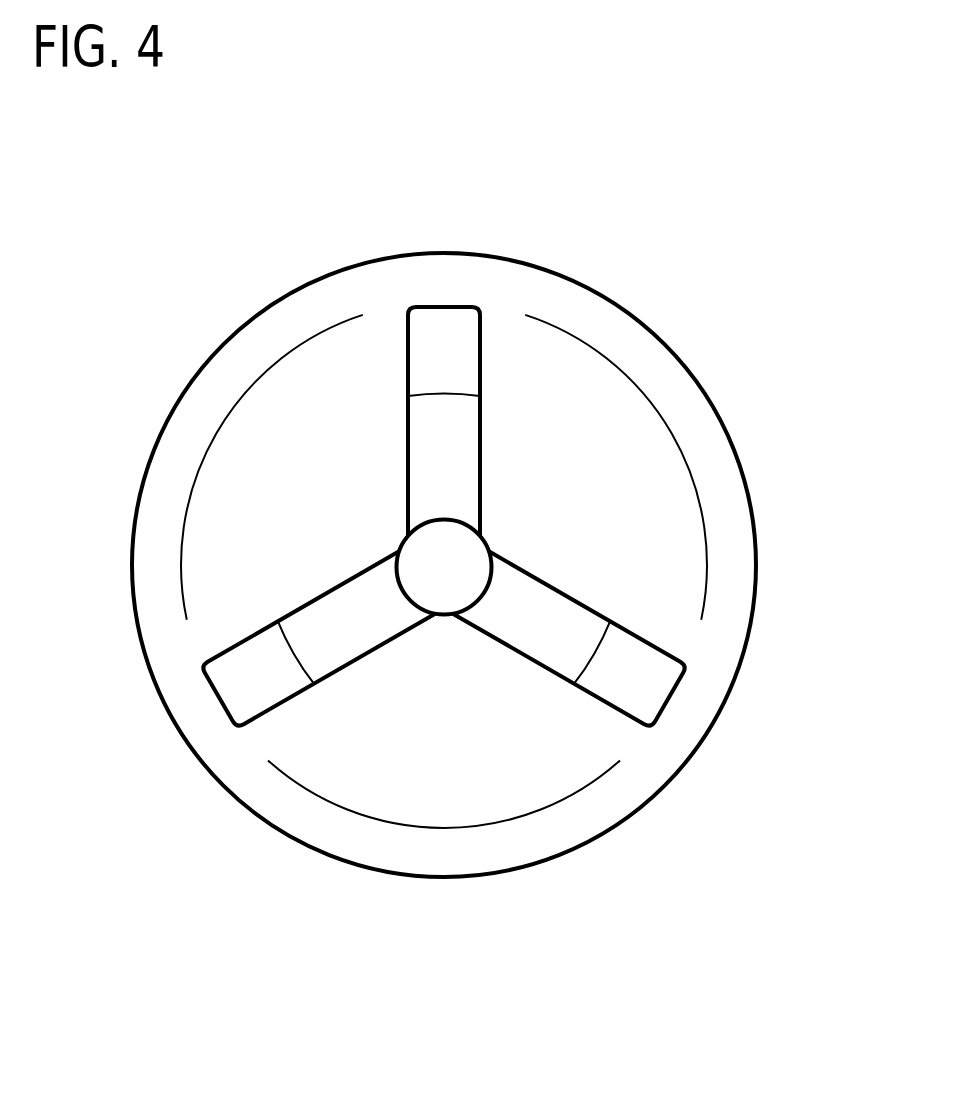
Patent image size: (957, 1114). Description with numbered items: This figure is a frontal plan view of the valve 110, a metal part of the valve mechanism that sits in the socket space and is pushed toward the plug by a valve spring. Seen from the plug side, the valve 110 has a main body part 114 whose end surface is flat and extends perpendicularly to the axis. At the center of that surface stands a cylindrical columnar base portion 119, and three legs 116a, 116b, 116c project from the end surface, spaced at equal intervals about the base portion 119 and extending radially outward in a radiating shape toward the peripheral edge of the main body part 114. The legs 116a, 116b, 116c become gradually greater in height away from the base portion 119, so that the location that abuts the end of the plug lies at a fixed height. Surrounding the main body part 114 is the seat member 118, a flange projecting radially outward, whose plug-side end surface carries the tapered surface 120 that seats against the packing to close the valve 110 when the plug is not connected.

The valve 110 is at (693, 301).
The main body part 114 is at (402, 581).
The leg 116a is at (437, 340).
The leg 116b is at (257, 675).
The leg 116c is at (648, 683).
The seat member 118 is at (232, 467).
The base portion 119 is at (472, 547).
The tapered surface 120 is at (500, 802).